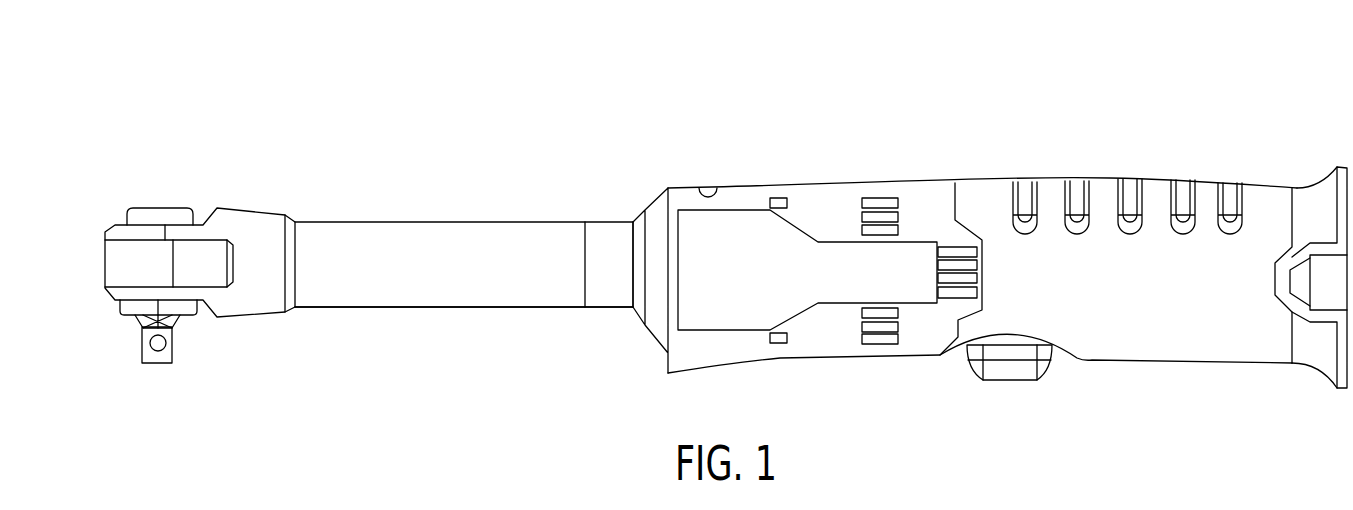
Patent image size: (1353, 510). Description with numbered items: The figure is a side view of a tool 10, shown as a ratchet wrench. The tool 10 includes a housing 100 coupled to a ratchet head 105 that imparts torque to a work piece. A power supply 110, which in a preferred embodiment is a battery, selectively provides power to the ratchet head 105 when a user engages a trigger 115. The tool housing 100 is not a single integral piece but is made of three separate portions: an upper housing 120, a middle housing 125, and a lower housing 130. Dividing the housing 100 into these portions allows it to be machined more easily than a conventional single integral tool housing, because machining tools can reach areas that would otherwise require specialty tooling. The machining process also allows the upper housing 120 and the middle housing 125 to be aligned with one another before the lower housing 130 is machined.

The tool 10 is at (940, 83).
The housing 100 is at (405, 248).
The ratchet head 105 is at (158, 363).
The power supply 110 is at (1170, 357).
The trigger 115 is at (995, 375).
The upper housing 120 is at (253, 222).
The middle housing 125 is at (443, 308).
The lower housing 130 is at (607, 237).